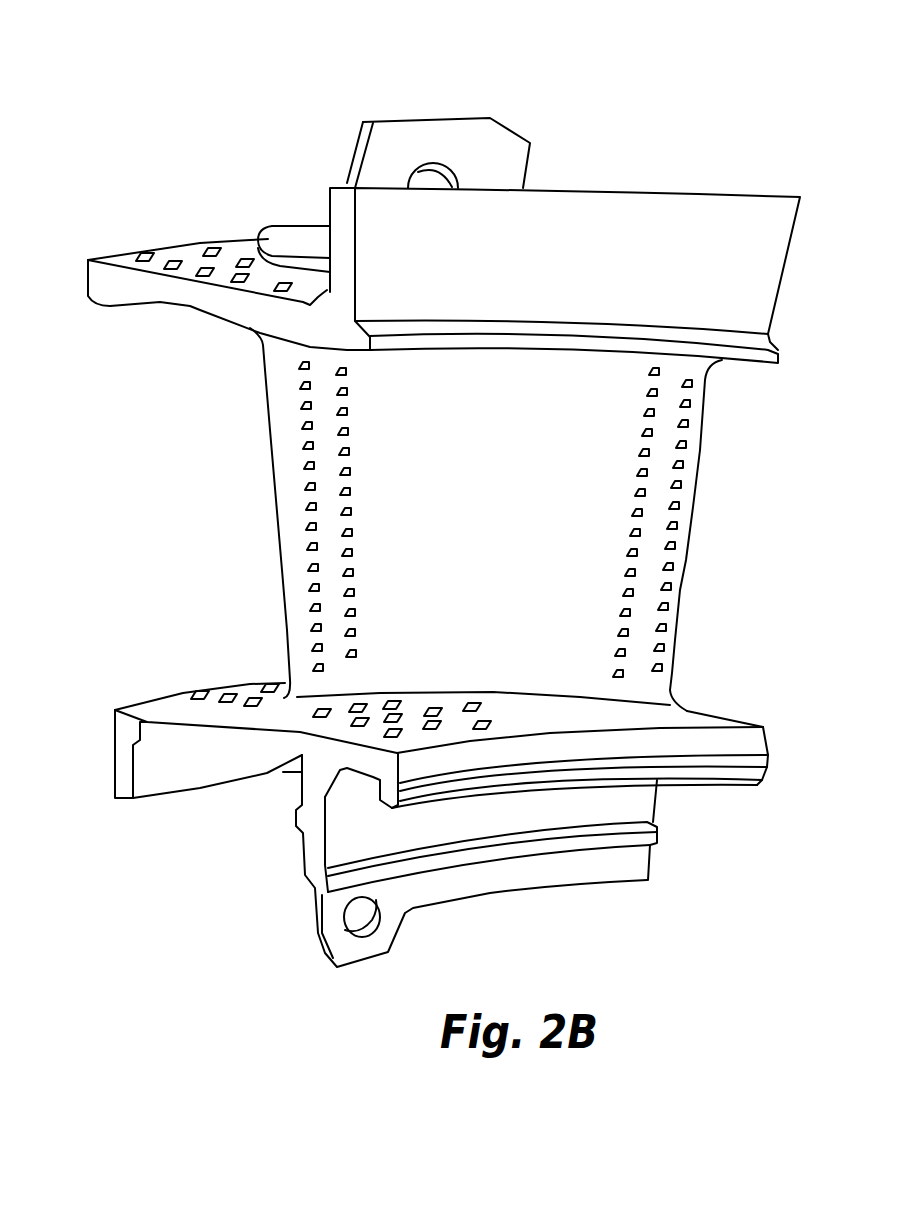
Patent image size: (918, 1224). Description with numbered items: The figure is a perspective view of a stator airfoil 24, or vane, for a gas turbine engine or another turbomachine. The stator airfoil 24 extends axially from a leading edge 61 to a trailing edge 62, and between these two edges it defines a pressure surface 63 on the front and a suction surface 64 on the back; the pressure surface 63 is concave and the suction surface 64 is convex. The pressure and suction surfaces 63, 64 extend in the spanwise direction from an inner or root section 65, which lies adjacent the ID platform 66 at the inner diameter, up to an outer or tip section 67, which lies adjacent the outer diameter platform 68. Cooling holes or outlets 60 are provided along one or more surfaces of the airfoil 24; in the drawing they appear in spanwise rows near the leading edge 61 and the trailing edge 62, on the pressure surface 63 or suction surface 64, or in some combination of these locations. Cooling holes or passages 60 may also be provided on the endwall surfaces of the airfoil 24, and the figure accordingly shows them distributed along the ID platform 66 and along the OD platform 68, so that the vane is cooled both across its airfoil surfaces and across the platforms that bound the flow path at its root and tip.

The stator airfoil 24 is at (120, 110).
The cooling holes 60 is at (213, 250).
The leading edge 61 is at (267, 397).
The trailing edge 62 is at (680, 582).
The pressure surface 63 is at (406, 520).
The suction surface 64 is at (690, 520).
The inner section 65 is at (303, 677).
The ID platform 66 is at (753, 738).
The outer section 67 is at (280, 356).
The OD platform 68 is at (103, 293).